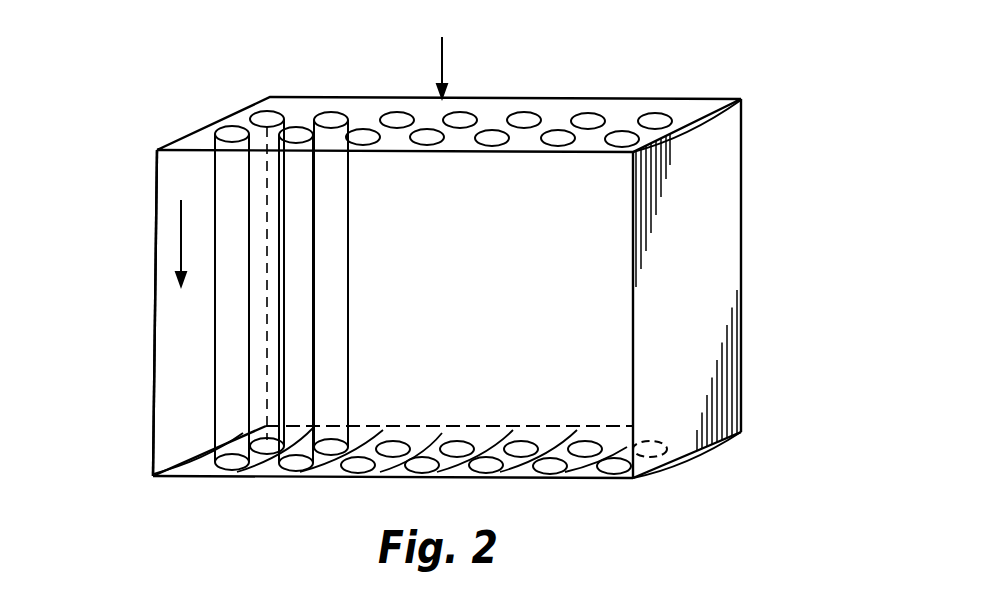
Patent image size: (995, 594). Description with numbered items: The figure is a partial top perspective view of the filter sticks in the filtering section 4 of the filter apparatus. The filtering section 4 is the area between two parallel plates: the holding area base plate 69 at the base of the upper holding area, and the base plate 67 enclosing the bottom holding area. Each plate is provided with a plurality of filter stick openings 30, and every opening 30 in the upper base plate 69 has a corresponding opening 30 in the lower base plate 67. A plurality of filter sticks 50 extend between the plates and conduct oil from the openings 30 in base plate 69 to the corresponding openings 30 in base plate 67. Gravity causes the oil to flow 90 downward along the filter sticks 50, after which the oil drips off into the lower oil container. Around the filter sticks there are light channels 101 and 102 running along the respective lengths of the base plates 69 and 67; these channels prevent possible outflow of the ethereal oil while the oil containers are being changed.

The filtering section 4 is at (562, 323).
The filter stick openings 30 is at (262, 108).
The filter sticks 50 is at (227, 353).
The base plate 67 is at (557, 483).
The holding area base plate 69 is at (597, 98).
The oil flow 90 is at (445, 48).
The light channel 101 is at (714, 138).
The light channel 102 is at (720, 461).